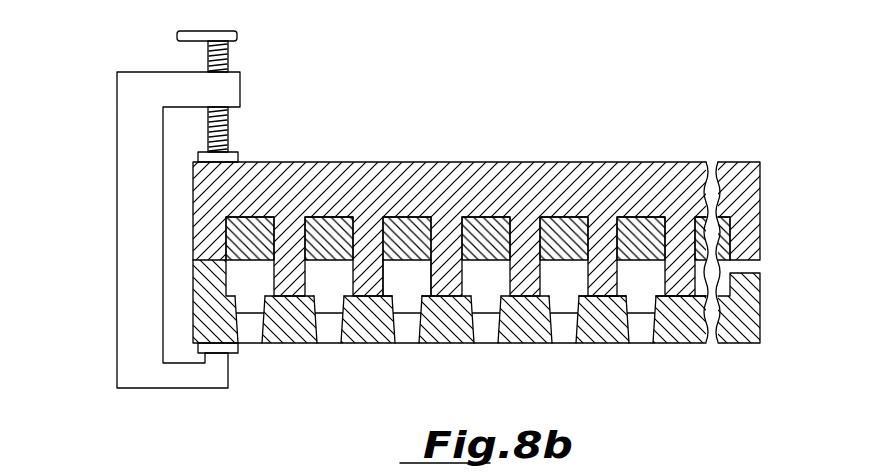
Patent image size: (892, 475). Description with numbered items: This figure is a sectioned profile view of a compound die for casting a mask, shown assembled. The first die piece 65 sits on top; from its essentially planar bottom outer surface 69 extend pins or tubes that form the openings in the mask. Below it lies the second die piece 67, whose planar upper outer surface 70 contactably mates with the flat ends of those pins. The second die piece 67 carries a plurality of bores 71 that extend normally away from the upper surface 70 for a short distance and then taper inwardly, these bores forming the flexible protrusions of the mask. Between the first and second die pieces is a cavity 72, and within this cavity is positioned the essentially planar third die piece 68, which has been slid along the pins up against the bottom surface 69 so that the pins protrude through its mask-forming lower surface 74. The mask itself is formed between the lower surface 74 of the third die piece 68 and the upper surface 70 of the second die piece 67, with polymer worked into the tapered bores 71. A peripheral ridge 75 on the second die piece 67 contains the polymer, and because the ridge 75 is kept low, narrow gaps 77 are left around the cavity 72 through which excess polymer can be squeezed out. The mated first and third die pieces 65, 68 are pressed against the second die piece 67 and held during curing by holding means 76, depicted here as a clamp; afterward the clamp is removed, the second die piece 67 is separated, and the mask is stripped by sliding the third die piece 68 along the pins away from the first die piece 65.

The first die piece 65 is at (435, 163).
The second die piece 67 is at (447, 335).
The third die piece 68 is at (557, 233).
The bottom outer surface 69 is at (405, 220).
The upper outer surface 70 is at (680, 297).
The bores 71 is at (565, 327).
The cavity 72 is at (328, 282).
The lower surface 74 is at (410, 263).
The ridge 75 is at (757, 287).
The means for holding 76 is at (137, 168).
The gaps 77 is at (750, 268).